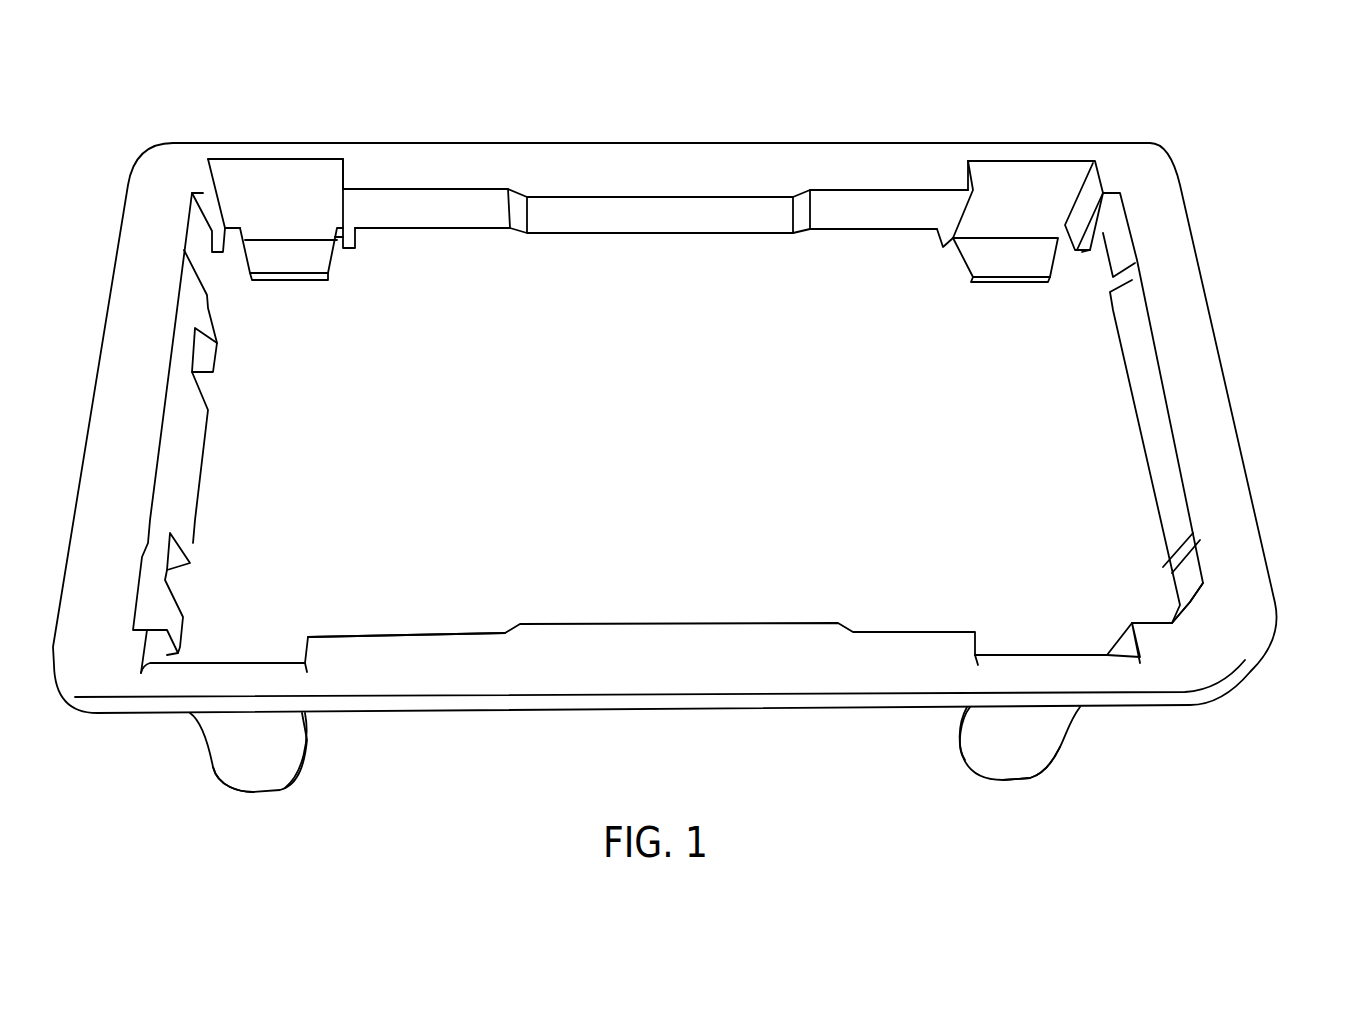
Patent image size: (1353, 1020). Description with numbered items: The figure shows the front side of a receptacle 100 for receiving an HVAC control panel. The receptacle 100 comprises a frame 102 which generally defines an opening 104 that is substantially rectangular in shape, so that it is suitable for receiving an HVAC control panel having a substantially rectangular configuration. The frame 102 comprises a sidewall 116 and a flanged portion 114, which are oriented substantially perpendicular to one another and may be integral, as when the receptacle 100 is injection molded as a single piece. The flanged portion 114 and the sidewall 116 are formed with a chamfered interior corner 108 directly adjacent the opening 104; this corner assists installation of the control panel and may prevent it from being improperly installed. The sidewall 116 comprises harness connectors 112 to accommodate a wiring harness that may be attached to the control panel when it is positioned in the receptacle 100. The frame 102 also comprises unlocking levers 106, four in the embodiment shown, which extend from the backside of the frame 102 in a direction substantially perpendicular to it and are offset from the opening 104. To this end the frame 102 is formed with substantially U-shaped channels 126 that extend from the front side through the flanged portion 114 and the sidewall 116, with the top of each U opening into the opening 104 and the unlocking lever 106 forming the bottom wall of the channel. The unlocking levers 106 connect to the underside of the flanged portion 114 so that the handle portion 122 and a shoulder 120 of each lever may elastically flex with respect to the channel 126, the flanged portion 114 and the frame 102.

The receptacle 100 is at (765, 82).
The frame 102 is at (1212, 313).
The opening 104 is at (678, 459).
The unlocking levers 106 is at (278, 175).
The chamfered interior corner 108 is at (1188, 602).
The harness connectors 112 is at (210, 345).
The flanged portion 114 is at (128, 222).
The sidewall 116 is at (600, 228).
The shoulder 120 is at (337, 270).
The handle portion 122 is at (203, 742).
The substantially U-shaped channels 126 is at (317, 180).